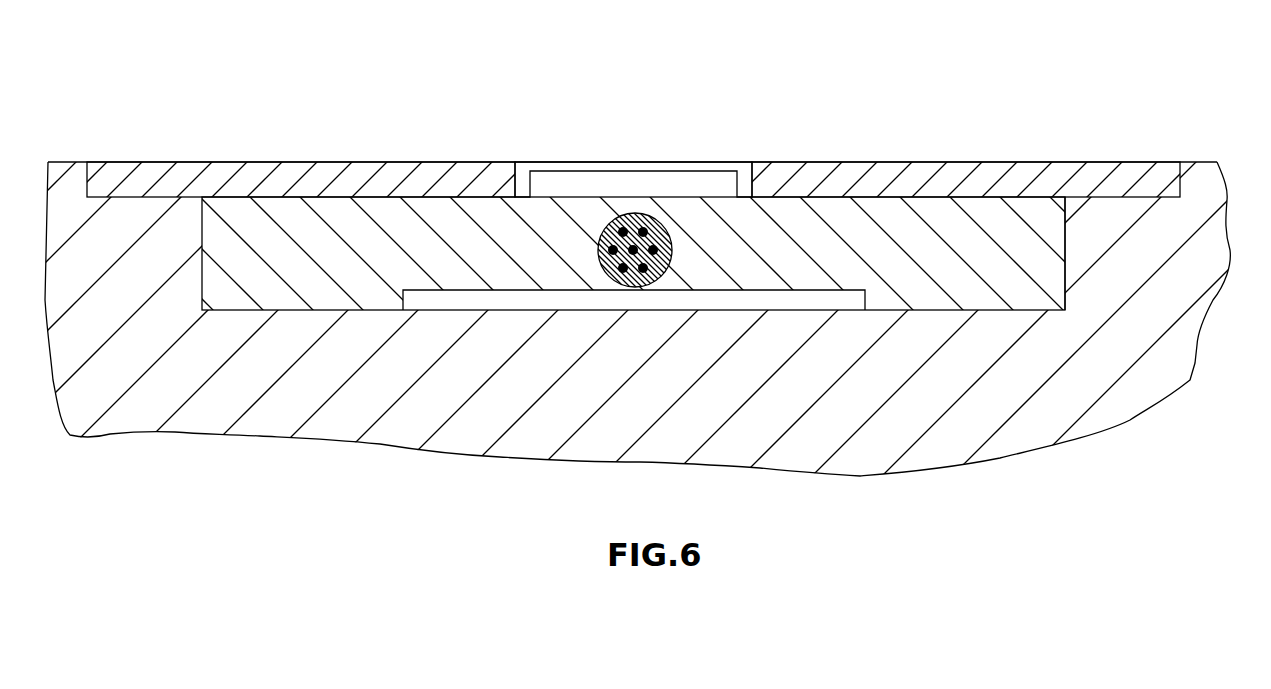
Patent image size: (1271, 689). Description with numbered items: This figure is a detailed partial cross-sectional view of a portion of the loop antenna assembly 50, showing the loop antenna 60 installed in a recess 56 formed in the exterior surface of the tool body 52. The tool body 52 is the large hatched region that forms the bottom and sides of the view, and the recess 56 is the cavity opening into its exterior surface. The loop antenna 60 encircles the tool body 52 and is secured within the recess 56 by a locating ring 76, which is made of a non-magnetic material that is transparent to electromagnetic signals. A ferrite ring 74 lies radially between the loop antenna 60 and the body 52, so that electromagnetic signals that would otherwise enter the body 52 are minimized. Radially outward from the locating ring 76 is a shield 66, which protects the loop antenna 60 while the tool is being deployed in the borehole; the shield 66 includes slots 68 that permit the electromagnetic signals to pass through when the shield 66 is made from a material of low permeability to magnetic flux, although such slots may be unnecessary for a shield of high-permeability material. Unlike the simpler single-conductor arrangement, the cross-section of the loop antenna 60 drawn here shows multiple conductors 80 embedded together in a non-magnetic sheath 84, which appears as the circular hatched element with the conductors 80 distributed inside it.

The loop antenna assembly 50 is at (930, 58).
The tool body 52 is at (1012, 396).
The recess 56 is at (289, 310).
The loop antenna 60 is at (672, 242).
The shield 66 is at (290, 162).
The slots 68 is at (708, 162).
The ferrite ring 74 is at (785, 310).
The locating ring 76 is at (1040, 238).
The conductors 80 is at (662, 216).
The non-magnetic sheath 84 is at (662, 232).